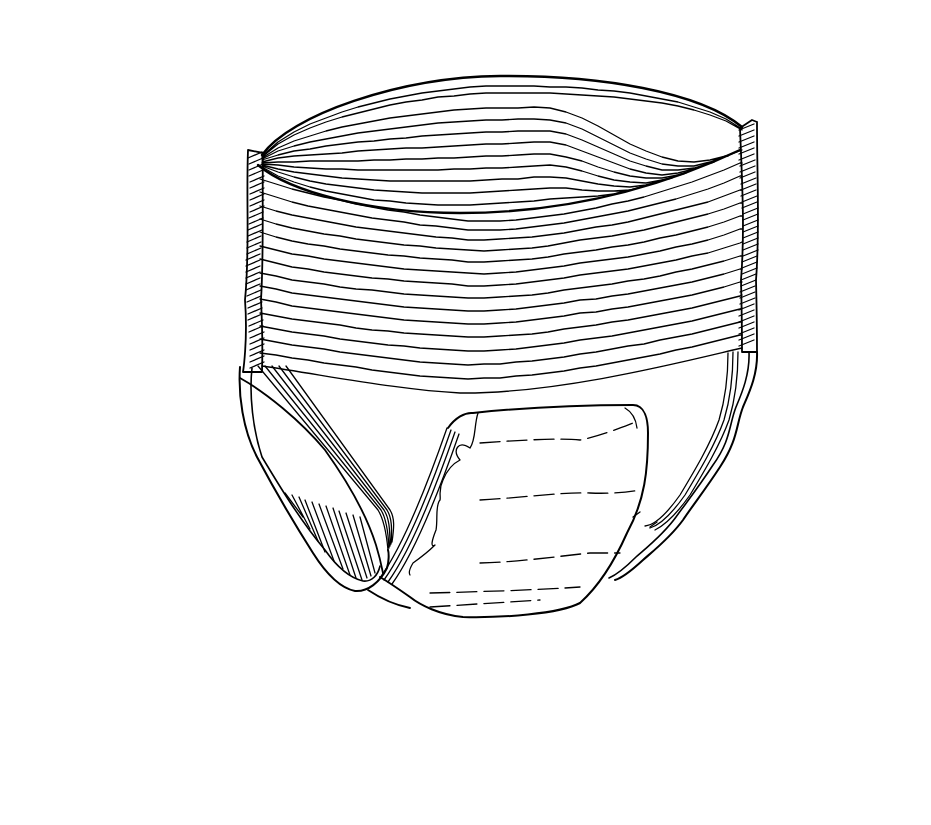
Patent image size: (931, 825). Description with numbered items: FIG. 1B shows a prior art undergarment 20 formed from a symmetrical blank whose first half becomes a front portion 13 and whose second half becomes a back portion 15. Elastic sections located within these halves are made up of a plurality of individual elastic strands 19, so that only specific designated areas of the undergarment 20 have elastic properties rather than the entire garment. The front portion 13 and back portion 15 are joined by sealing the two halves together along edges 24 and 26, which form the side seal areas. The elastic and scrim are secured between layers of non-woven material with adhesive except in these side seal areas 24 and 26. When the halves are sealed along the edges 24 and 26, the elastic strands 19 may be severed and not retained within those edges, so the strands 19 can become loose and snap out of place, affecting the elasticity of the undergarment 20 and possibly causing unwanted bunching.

The undergarment 20 is at (140, 283).
The back portion 15 is at (288, 124).
The front portion 13 is at (285, 315).
The elastic strands 19 is at (738, 275).
The edge 24 is at (248, 180).
The edge 26 is at (752, 157).